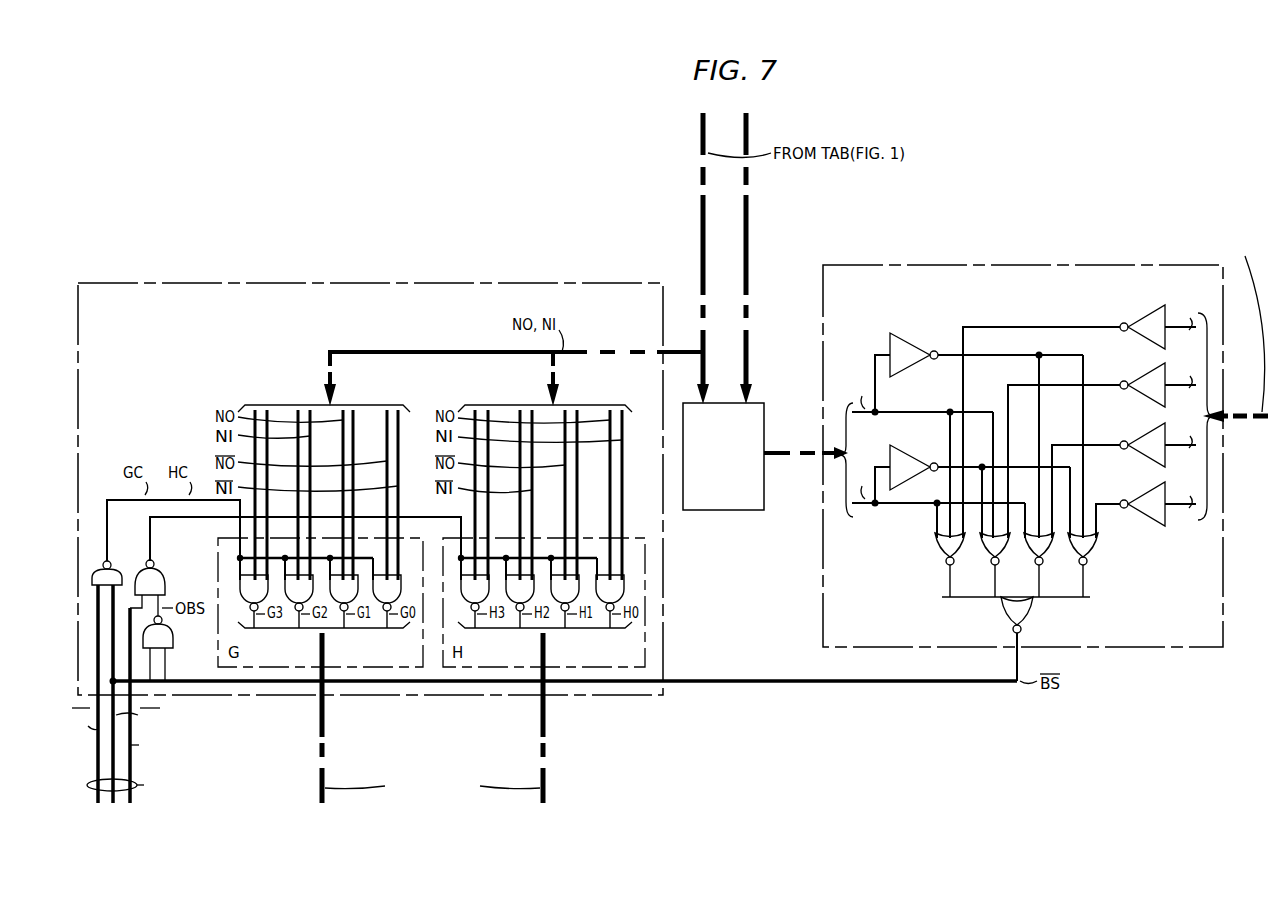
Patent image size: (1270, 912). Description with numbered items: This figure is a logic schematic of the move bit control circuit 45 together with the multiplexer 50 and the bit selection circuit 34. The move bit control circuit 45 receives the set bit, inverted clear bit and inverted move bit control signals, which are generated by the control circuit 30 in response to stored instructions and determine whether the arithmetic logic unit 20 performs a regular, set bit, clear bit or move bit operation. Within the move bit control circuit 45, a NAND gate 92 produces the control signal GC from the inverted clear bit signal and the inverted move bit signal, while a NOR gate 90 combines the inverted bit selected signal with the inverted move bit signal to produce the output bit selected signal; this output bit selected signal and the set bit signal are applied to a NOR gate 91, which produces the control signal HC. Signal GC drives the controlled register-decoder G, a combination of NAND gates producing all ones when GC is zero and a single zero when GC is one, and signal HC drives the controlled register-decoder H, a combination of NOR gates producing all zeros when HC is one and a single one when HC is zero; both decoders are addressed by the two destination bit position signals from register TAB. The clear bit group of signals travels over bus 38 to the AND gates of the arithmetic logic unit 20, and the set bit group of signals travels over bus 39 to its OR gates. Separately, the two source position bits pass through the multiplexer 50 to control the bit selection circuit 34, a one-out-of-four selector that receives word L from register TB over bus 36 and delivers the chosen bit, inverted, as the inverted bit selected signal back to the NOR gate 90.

The move bit control circuit 45 is at (161, 366).
The multiplexer 50 is at (713, 494).
The bit selection circuit 34 is at (1042, 299).
The bus 36 is at (1254, 418).
The bus 38 is at (325, 727).
The bus 39 is at (546, 727).
The NOR gate 90 is at (175, 640).
The NOR gate 91 is at (154, 562).
The NAND gate 92 is at (110, 563).
The control circuit 30 is at (282, 795).
The arithmetic logic unit 20 is at (474, 784).